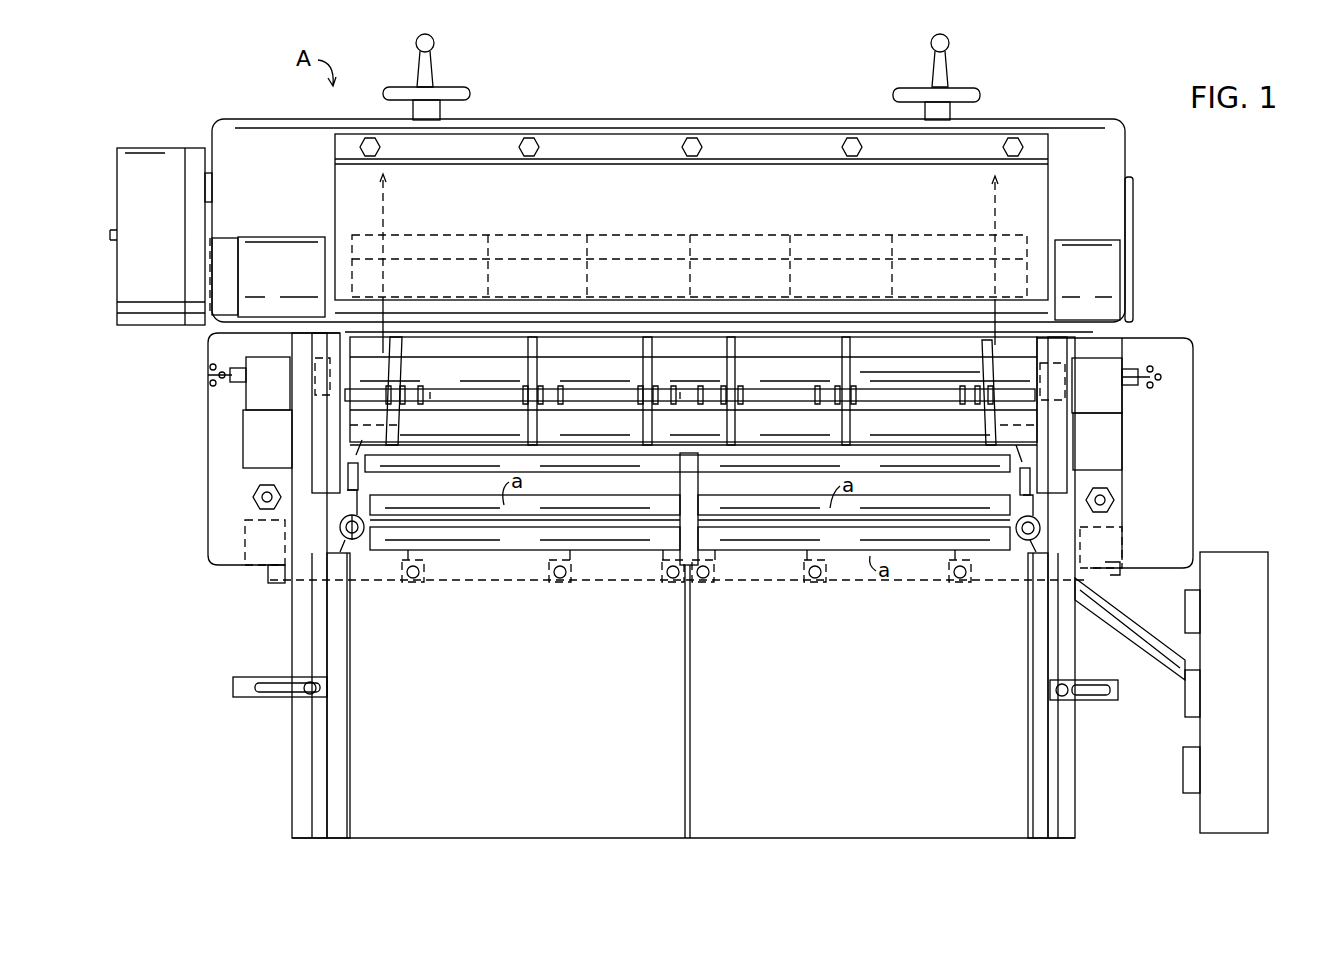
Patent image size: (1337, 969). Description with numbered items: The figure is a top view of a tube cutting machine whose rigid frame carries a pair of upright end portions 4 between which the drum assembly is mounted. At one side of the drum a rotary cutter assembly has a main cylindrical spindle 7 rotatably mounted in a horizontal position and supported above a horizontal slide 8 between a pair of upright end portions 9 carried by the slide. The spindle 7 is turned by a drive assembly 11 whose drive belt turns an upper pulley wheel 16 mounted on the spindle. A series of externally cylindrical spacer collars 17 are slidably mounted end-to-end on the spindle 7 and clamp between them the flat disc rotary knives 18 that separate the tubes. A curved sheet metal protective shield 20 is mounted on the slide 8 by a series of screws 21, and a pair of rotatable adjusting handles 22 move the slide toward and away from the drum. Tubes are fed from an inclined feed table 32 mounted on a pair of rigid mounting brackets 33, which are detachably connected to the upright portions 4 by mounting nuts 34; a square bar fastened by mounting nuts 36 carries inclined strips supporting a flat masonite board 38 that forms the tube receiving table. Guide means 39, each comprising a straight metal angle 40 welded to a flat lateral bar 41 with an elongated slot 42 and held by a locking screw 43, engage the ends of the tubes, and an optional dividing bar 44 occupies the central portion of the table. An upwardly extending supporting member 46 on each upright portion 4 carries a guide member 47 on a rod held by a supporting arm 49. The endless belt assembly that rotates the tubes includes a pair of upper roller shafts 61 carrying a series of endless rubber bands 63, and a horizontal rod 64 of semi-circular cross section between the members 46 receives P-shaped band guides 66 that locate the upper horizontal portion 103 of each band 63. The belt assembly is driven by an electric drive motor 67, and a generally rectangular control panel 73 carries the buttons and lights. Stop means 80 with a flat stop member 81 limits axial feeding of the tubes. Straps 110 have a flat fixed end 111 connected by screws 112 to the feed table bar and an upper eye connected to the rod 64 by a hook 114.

The upright end portion 4 is at (255, 448).
The main cylindrical spindle 7 is at (720, 258).
The horizontal slide 8 is at (1065, 135).
The upright end portion 9 is at (290, 240).
The drive assembly 11 is at (164, 132).
The upper pulley wheel 16 is at (225, 243).
The spacer collar 17 is at (490, 228).
The rotary knife 18 is at (385, 205).
The protective shield 20 is at (1047, 180).
The screw 21 is at (368, 147).
The adjusting handle 22 is at (455, 90).
The feed table 32 is at (281, 815).
The mounting bracket 33 is at (240, 565).
The mounting nut 34 is at (253, 505).
The mounting nut 36 is at (275, 580).
The masonite board 38 is at (298, 775).
The guide means 39 is at (330, 828).
The metal angle 40 is at (350, 653).
The lateral bar 41 is at (250, 677).
The elongated slot 42 is at (258, 690).
The locking screw 43 is at (310, 695).
The dividing bar 44 is at (687, 705).
The supporting member 46 is at (325, 437).
The guide member 47 is at (365, 468).
The supporting arm 49 is at (355, 500).
The upper roller shaft 61 is at (452, 355).
The endless rubber band 63 is at (980, 355).
The horizontal rod 64 is at (905, 400).
The band guide 66 is at (540, 402).
The electric drive motor 67 is at (1133, 235).
The control panel 73 is at (1255, 677).
The stop means 80 is at (283, 355).
The stop member 81 is at (400, 426).
The upper horizontal portion 103 is at (855, 372).
The strap 110 is at (760, 556).
The fixed end 111 is at (573, 557).
The screw 112 is at (413, 582).
The hook 114 is at (430, 400).